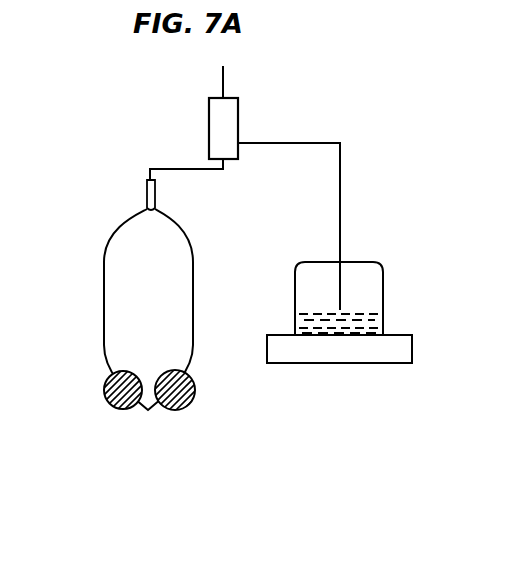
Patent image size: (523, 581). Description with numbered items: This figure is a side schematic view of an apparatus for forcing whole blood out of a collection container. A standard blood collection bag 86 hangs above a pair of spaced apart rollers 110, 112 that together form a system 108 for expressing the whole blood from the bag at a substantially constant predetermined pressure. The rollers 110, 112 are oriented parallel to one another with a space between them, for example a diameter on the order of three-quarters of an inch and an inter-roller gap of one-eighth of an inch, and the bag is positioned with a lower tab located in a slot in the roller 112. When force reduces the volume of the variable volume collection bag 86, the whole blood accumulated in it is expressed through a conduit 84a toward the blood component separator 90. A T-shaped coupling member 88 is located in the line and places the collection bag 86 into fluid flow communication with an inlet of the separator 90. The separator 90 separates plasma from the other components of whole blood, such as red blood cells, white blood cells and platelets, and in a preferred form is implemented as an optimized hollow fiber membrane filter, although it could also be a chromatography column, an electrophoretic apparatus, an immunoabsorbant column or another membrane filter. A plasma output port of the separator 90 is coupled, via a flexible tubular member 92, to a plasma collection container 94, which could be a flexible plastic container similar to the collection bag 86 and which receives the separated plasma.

The conduit 84a is at (172, 168).
The collection bag 86 is at (163, 299).
The T-shaped coupling member 88 is at (223, 84).
The blood component separator 90 is at (238, 116).
The flexible tubular member 92 is at (340, 176).
The plasma collection container 94 is at (378, 281).
The system 108 is at (88, 423).
The roller 110 is at (112, 381).
The roller 112 is at (186, 383).